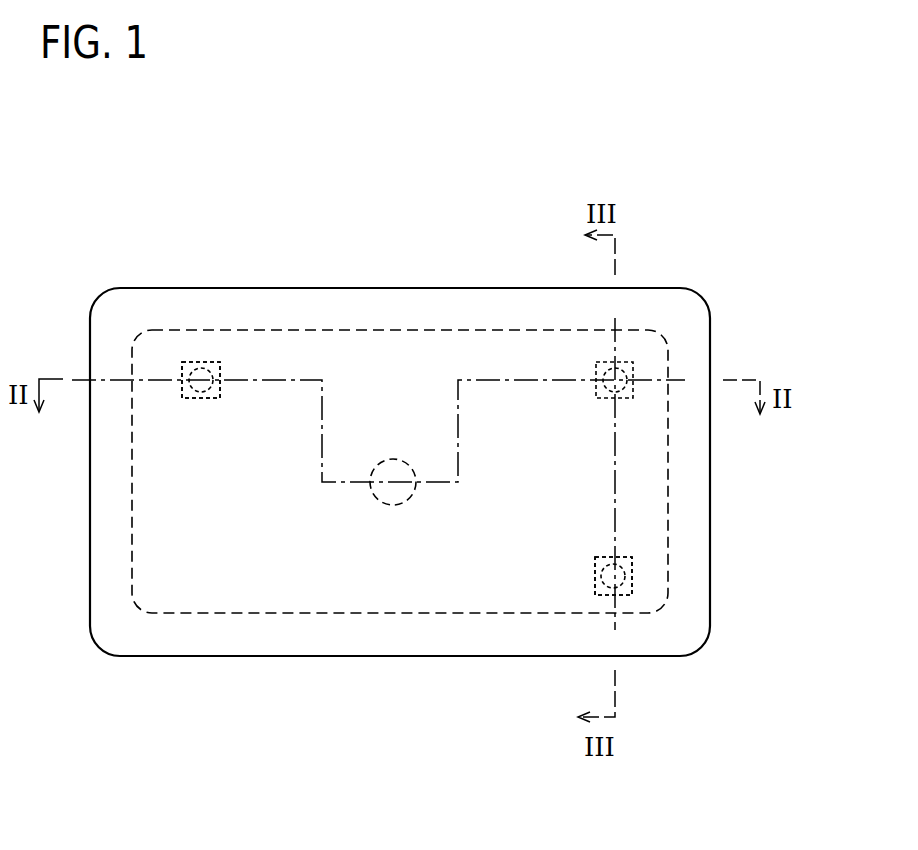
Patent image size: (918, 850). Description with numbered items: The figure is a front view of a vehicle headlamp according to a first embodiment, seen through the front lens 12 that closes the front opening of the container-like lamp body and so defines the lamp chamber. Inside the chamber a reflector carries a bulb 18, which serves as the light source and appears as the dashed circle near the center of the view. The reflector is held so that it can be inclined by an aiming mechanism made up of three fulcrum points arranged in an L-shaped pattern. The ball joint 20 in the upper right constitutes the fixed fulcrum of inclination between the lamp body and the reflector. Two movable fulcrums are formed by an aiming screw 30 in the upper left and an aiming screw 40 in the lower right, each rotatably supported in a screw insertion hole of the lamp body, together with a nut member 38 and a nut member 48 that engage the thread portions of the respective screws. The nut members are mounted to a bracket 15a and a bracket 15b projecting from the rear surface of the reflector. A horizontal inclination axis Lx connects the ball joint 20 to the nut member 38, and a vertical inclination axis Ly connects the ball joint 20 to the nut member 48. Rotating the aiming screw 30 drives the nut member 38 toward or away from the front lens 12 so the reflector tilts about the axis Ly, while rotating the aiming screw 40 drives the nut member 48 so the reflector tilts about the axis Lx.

The front lens 12 is at (208, 562).
The bulb 18 is at (395, 508).
The inclination axis Lx is at (480, 380).
The inclination axis Ly is at (615, 470).
The bracket 15a is at (220, 363).
The bracket 15b is at (620, 594).
The ball joint 20 is at (632, 375).
The aiming screw 30 is at (205, 358).
The nut member 38 is at (200, 360).
The aiming screw 40 is at (626, 583).
The nut member 48 is at (624, 574).